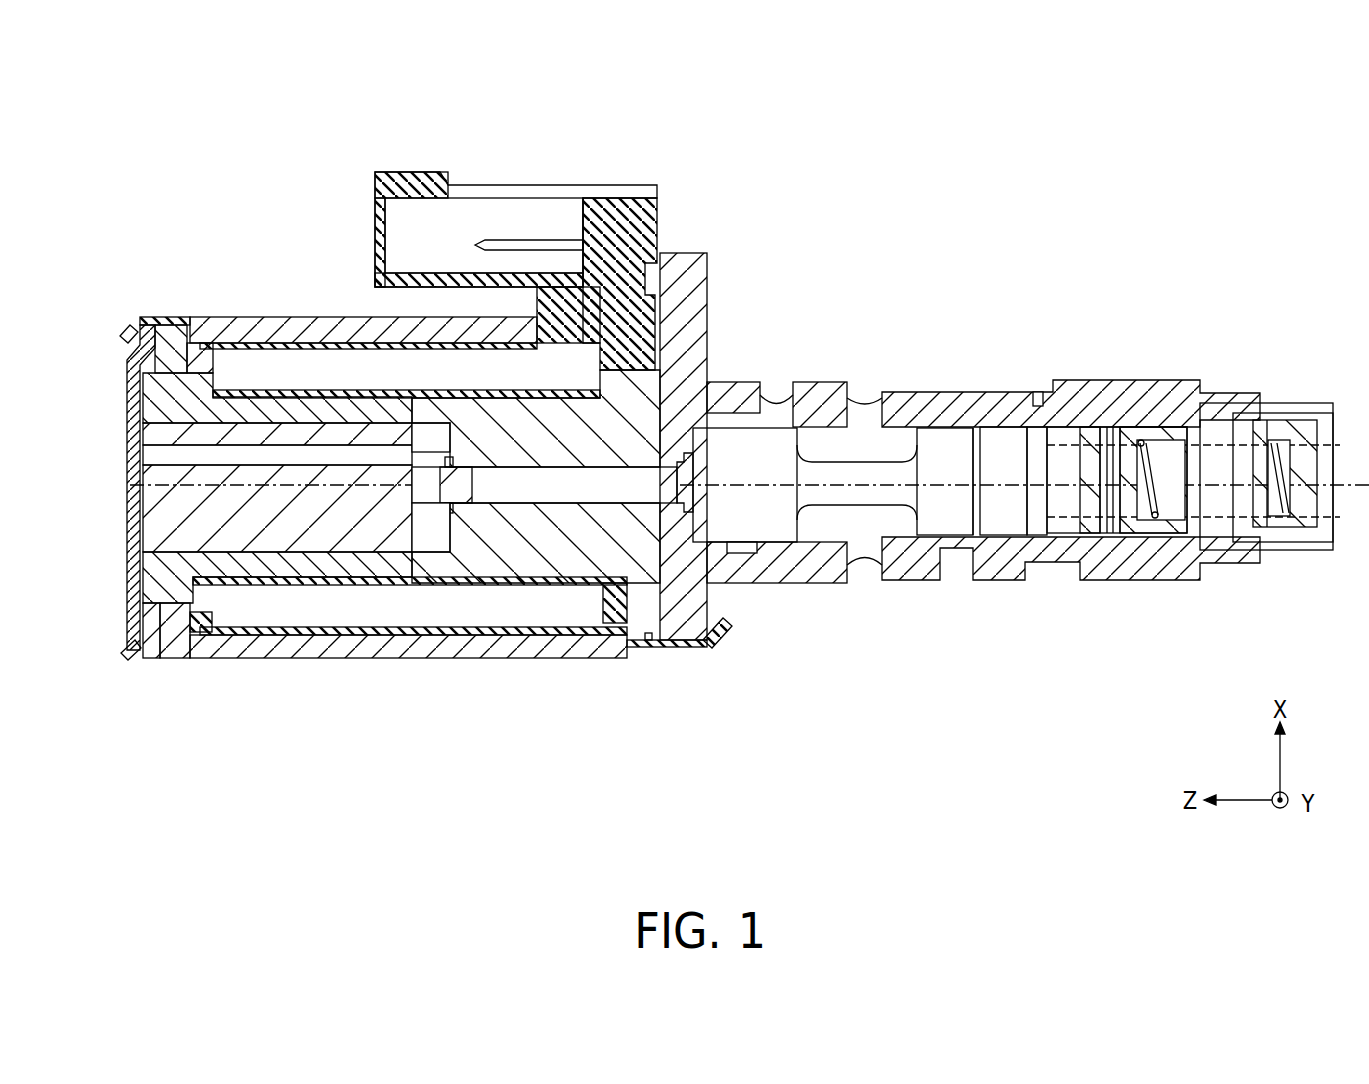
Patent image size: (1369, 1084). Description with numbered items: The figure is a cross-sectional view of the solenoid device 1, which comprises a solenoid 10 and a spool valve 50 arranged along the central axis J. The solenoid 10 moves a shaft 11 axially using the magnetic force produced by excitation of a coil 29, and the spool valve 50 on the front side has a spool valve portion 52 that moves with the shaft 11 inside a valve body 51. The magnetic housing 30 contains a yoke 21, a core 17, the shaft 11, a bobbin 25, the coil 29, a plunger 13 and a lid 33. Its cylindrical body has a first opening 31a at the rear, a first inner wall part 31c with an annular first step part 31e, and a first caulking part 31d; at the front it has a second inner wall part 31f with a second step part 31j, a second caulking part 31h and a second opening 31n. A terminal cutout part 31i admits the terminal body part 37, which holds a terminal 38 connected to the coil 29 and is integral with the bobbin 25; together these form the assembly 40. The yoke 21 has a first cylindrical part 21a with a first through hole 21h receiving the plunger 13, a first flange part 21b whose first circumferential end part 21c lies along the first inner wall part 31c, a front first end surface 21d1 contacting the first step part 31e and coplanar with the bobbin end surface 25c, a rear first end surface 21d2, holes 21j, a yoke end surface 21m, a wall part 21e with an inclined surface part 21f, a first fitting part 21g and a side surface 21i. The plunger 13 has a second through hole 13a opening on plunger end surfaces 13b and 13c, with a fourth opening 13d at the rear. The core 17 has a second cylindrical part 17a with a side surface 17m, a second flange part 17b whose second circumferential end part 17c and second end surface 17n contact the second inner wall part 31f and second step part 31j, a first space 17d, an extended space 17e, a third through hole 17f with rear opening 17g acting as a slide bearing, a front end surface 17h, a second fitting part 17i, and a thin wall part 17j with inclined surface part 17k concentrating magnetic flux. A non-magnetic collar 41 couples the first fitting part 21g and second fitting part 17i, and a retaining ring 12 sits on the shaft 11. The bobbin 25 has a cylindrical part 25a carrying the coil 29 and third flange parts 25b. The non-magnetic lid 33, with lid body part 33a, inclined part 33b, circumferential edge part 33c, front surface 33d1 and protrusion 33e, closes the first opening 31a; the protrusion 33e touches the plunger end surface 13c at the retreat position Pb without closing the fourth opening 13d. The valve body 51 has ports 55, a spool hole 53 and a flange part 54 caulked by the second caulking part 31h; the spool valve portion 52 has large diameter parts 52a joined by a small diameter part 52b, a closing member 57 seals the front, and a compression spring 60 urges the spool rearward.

The solenoid device 1 is at (1040, 140).
The solenoid 10 is at (490, 162).
The shaft 11 is at (553, 600).
The retaining ring 12 is at (412, 521).
The plunger 13 is at (342, 582).
The second through hole 13a is at (160, 462).
The plunger end surface 13b is at (380, 590).
The plunger end surface 13c is at (150, 530).
The fourth opening 13d is at (140, 444).
The core 17 is at (527, 652).
The second cylindrical part 17a is at (570, 590).
The second flange part 17b is at (662, 636).
The second circumferential end part 17c is at (650, 645).
The first space 17d is at (431, 437).
The extended space 17e is at (662, 360).
The third through hole 17f is at (603, 640).
The opening 17g is at (470, 600).
The end surface 17h is at (723, 410).
The second fitting part 17i is at (662, 303).
The thin wall part 17j is at (662, 322).
The inclined surface part 17k is at (430, 385).
The side surface 17m is at (505, 587).
The second end surface 17n is at (702, 598).
The yoke 21 is at (266, 392).
The first cylindrical part 21a is at (300, 393).
The first flange part 21b is at (172, 642).
The first circumferential end part 21c is at (178, 322).
The first end surface 21d1 is at (198, 335).
The first end surface 21d2 is at (130, 322).
The wall part 21e is at (335, 388).
The inclined surface part 21f is at (365, 390).
The first fitting part 21g is at (303, 625).
The first through hole 21h is at (128, 412).
The side surface 21i is at (255, 640).
The holes 21j is at (136, 637).
The yoke end surface 21m is at (148, 557).
The bobbin 25 is at (208, 640).
The cylindrical part 25a is at (360, 640).
The third flange part 25b is at (610, 300).
The end surface 25c is at (132, 366).
The coil 29 is at (440, 642).
The housing 30 is at (285, 660).
The first opening 31a is at (140, 650).
The first inner wall part 31c is at (168, 652).
The first caulking part 31d is at (140, 666).
The first step part 31e is at (190, 327).
The second inner wall part 31f is at (657, 641).
The second caulking part 31h is at (722, 646).
The terminal cutout part 31i is at (515, 325).
The second step part 31j is at (627, 657).
The second opening 31n is at (755, 590).
The lid 33 is at (127, 595).
The lid body part 33a is at (130, 578).
The inclined part 33b is at (128, 356).
The circumferential edge part 33c is at (125, 333).
The surface 33d1 is at (152, 330).
The protrusion 33e is at (135, 490).
The terminal body part 37 is at (660, 232).
The terminal 38 is at (535, 240).
The assembly 40 is at (666, 187).
The collar 41 is at (425, 630).
The spool valve 50 is at (1090, 366).
The valve body 51 is at (911, 584).
The spool valve portion 52 is at (958, 548).
The large diameter parts 52a is at (930, 430).
The small diameter part 52b is at (868, 420).
The spool hole 53 is at (1000, 430).
The flange part 54 is at (717, 650).
The ports 55 is at (868, 590).
The closing member 57 is at (1300, 560).
The compression spring 60 is at (1240, 535).
The central axis J is at (1344, 487).
The retreat position Pb is at (216, 631).